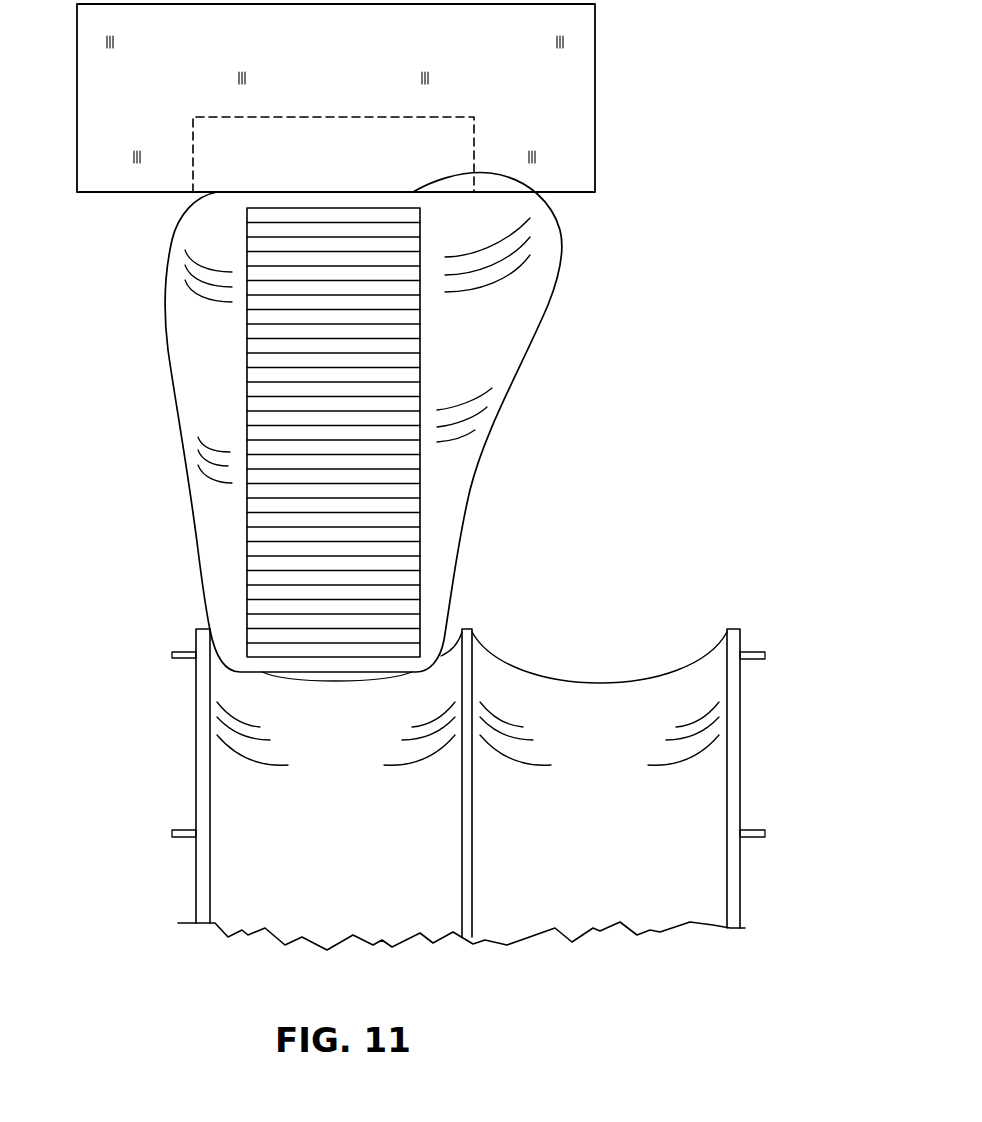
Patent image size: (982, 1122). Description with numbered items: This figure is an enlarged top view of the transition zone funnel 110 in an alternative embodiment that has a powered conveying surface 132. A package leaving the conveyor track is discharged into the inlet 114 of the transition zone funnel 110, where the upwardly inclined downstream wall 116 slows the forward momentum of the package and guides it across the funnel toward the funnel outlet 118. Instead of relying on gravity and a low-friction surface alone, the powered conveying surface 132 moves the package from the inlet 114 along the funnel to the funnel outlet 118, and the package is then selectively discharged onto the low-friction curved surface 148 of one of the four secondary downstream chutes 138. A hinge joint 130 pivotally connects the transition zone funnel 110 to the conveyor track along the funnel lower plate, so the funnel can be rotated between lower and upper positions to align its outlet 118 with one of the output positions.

The transition zone funnel 110 is at (567, 397).
The inlet 114 is at (387, 200).
The upwardly inclined downstream wall 116 is at (462, 305).
The funnel outlet 118 is at (337, 648).
The hinge joint 130 is at (474, 117).
The powered conveying surface 132 is at (312, 389).
The secondary downstream chute 138 is at (758, 848).
The low-friction curved surface 148 is at (537, 815).